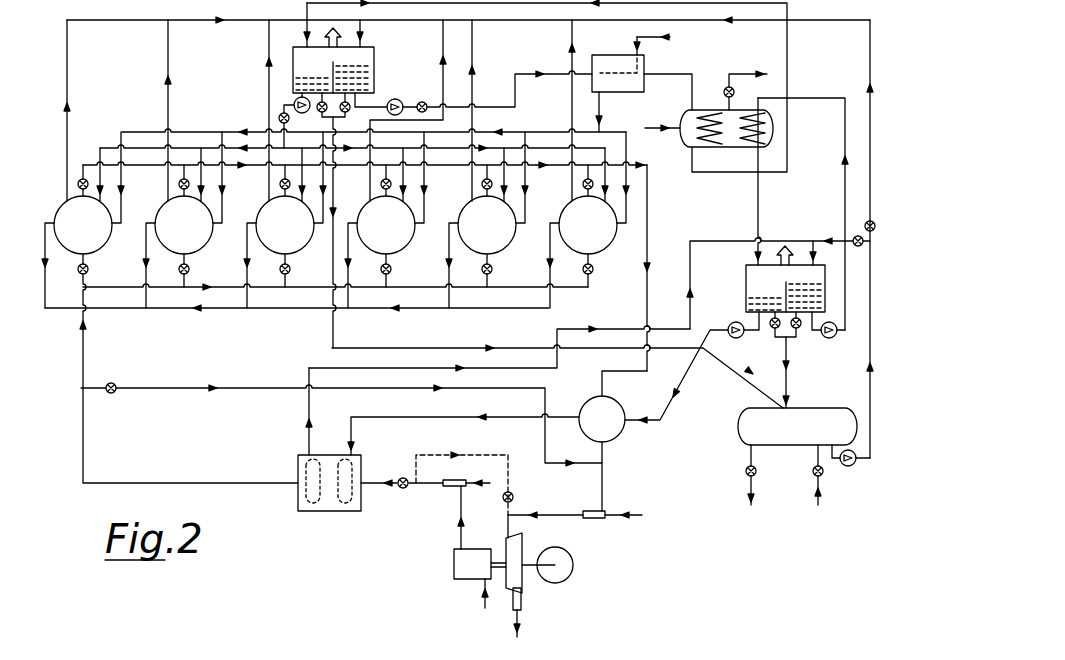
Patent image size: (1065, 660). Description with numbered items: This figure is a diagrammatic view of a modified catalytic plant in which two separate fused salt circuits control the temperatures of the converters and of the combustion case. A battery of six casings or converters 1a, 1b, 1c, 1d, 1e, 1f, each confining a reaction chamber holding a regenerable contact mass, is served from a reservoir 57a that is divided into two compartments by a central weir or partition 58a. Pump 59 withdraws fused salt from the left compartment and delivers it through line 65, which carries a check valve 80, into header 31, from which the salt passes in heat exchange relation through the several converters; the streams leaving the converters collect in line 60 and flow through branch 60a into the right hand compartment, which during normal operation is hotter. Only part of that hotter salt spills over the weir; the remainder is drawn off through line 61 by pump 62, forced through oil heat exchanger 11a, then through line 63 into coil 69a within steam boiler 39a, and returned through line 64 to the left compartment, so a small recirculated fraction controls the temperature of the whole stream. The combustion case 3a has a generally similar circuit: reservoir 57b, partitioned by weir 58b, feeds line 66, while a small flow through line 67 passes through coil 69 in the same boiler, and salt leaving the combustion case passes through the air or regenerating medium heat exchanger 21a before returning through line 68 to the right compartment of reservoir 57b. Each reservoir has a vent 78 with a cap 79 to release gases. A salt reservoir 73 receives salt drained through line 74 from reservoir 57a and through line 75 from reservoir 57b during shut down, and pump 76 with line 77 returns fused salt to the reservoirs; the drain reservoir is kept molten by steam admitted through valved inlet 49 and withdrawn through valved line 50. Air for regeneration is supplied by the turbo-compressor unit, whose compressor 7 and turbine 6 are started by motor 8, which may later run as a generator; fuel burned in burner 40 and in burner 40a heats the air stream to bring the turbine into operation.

The casing or converter 1a is at (98, 250).
The casing or converter 1b is at (199, 250).
The casing or converter 1c is at (300, 250).
The casing or converter 1d is at (401, 250).
The casing or converter 1e is at (502, 250).
The casing or converter 1f is at (603, 250).
The combustion case 3a is at (620, 436).
The turbine 6 is at (520, 540).
The compressor 7 is at (464, 579).
The starting motor 8 is at (556, 547).
The oil heat exchanger 11a is at (614, 92).
The air or regenerating medium heat exchanger 21a is at (329, 511).
The header 31 is at (184, 148).
The steam boiler 39a is at (682, 142).
The burner 40 is at (446, 486).
The burner 40a is at (592, 511).
The valved inlet 49 is at (813, 476).
The valved line 50 is at (747, 473).
The reservoir 57a is at (374, 70).
The central weir or partition 58a is at (333, 66).
The reservoir 57b is at (746, 288).
The central weir or partition 58b is at (786, 283).
The pump 59 is at (296, 100).
The line 60 is at (212, 20).
The branch 60a is at (360, 28).
The line 61 is at (377, 104).
The pump 62 is at (421, 102).
The line 63 is at (660, 74).
The line 64 is at (788, 56).
The line 65 is at (299, 112).
The line 66 is at (726, 336).
The line 67 is at (845, 218).
The line 68 is at (410, 368).
The coil 69 is at (770, 140).
The coil 69a is at (709, 147).
The salt reservoir 73 is at (832, 408).
The line 74 is at (400, 348).
The line 75 is at (788, 358).
The pump 76 is at (856, 466).
The line 77 is at (870, 385).
The vent 78 is at (341, 42).
The cap 79 is at (332, 33).
The check valve 80 is at (278, 116).